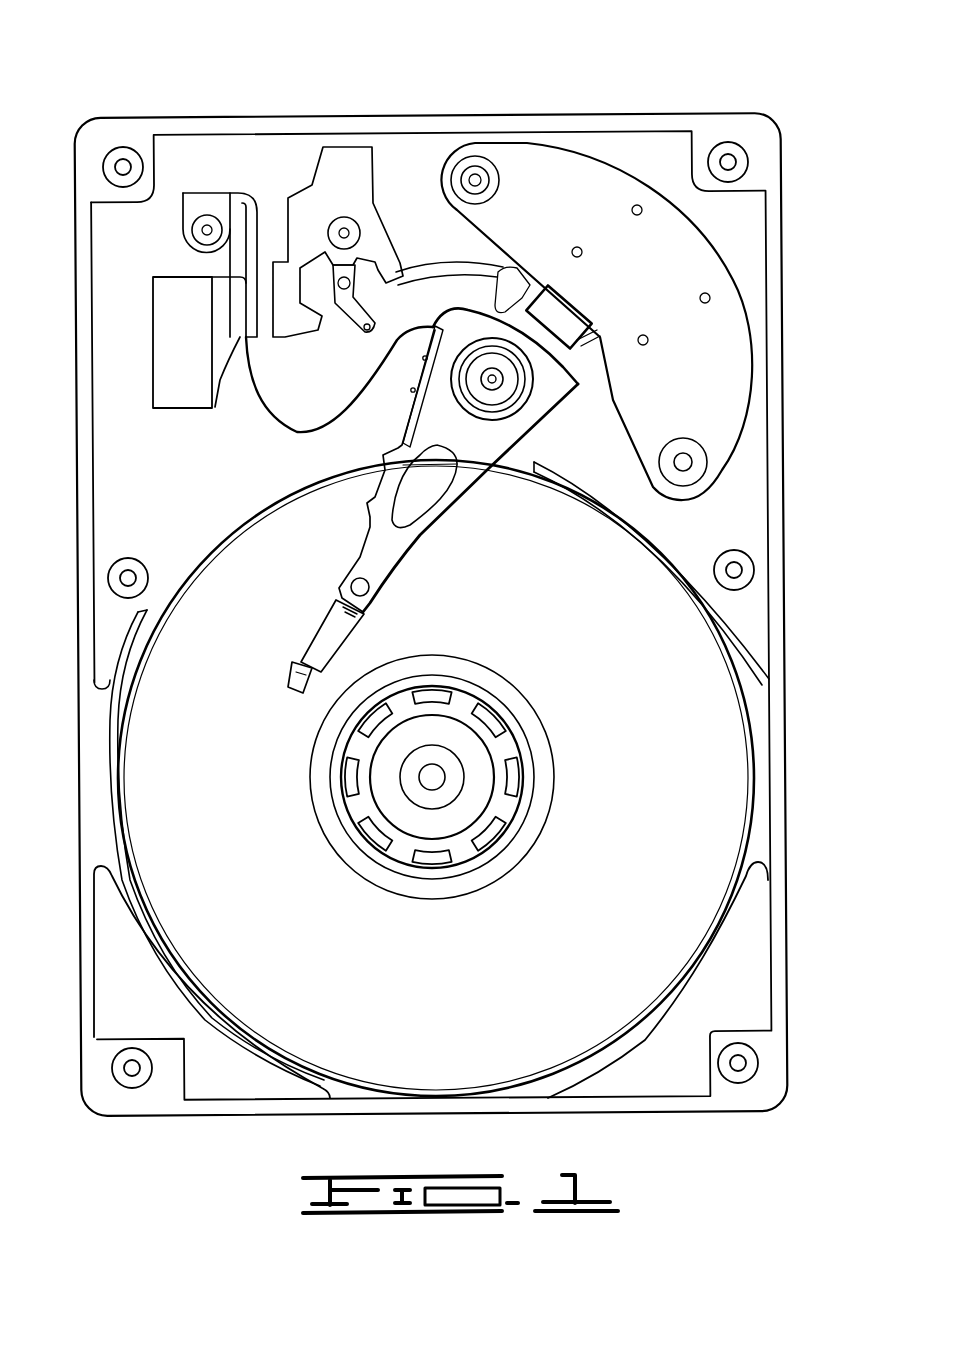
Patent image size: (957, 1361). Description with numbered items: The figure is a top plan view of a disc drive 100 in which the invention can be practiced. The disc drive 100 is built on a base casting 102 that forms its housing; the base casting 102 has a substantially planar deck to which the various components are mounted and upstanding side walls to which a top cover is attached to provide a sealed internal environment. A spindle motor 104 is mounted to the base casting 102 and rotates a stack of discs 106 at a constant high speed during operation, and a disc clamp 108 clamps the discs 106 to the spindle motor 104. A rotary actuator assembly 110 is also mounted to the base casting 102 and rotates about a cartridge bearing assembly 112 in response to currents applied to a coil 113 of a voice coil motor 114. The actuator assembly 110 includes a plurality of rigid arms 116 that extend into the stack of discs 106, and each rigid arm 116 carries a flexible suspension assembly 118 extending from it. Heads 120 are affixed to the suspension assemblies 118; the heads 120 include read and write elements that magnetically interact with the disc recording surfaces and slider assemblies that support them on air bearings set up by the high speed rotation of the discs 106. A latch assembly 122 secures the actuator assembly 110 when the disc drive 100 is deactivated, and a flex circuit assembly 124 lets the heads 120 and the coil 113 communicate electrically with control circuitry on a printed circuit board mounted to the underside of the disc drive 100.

The disc drive 100 is at (192, 97).
The base casting 102 is at (175, 477).
The spindle motor 104 is at (442, 802).
The discs 106 is at (679, 860).
The disc clamp 108 is at (330, 822).
The rotary actuator assembly 110 is at (467, 453).
The cartridge bearing assembly 112 is at (500, 393).
The coil 113 is at (593, 340).
The voice coil motor 114 is at (527, 215).
The rigid arms 116 is at (367, 562).
The flexible suspension assembly 118 is at (320, 647).
The heads 120 is at (291, 680).
The latch assembly 122 is at (345, 165).
The flex circuit assembly 124 is at (287, 437).